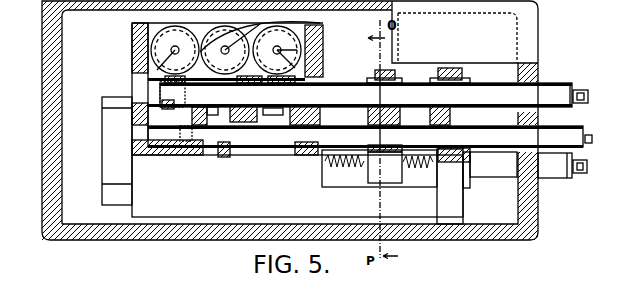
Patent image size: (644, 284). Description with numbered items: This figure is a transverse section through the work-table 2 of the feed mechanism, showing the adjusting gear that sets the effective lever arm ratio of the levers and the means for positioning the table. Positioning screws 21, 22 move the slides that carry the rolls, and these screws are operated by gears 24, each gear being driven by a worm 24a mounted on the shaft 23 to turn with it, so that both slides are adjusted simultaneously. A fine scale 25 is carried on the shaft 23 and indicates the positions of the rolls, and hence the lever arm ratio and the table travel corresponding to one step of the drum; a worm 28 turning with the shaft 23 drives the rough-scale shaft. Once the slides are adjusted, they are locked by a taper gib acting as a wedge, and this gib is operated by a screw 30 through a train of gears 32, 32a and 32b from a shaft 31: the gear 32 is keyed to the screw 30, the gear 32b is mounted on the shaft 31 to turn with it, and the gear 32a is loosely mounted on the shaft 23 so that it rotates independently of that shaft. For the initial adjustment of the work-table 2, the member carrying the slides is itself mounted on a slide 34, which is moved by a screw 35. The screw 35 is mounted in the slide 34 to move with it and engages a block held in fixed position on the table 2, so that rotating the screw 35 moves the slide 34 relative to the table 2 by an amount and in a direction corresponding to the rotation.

The work-table 2 is at (534, 212).
The screw 21 is at (315, 71).
The screw 22 is at (147, 71).
The shaft 23 is at (418, 97).
The gear 24 is at (297, 50).
The worm 24a is at (322, 110).
The fine scale 25 is at (572, 85).
The worm 28 is at (395, 47).
The screw 30 is at (239, 86).
The shaft 31 is at (277, 148).
The gear 32 is at (320, 23).
The gear 32a is at (213, 156).
The gear 32b is at (222, 150).
The slide 34 is at (167, 205).
The screw 35 is at (327, 172).